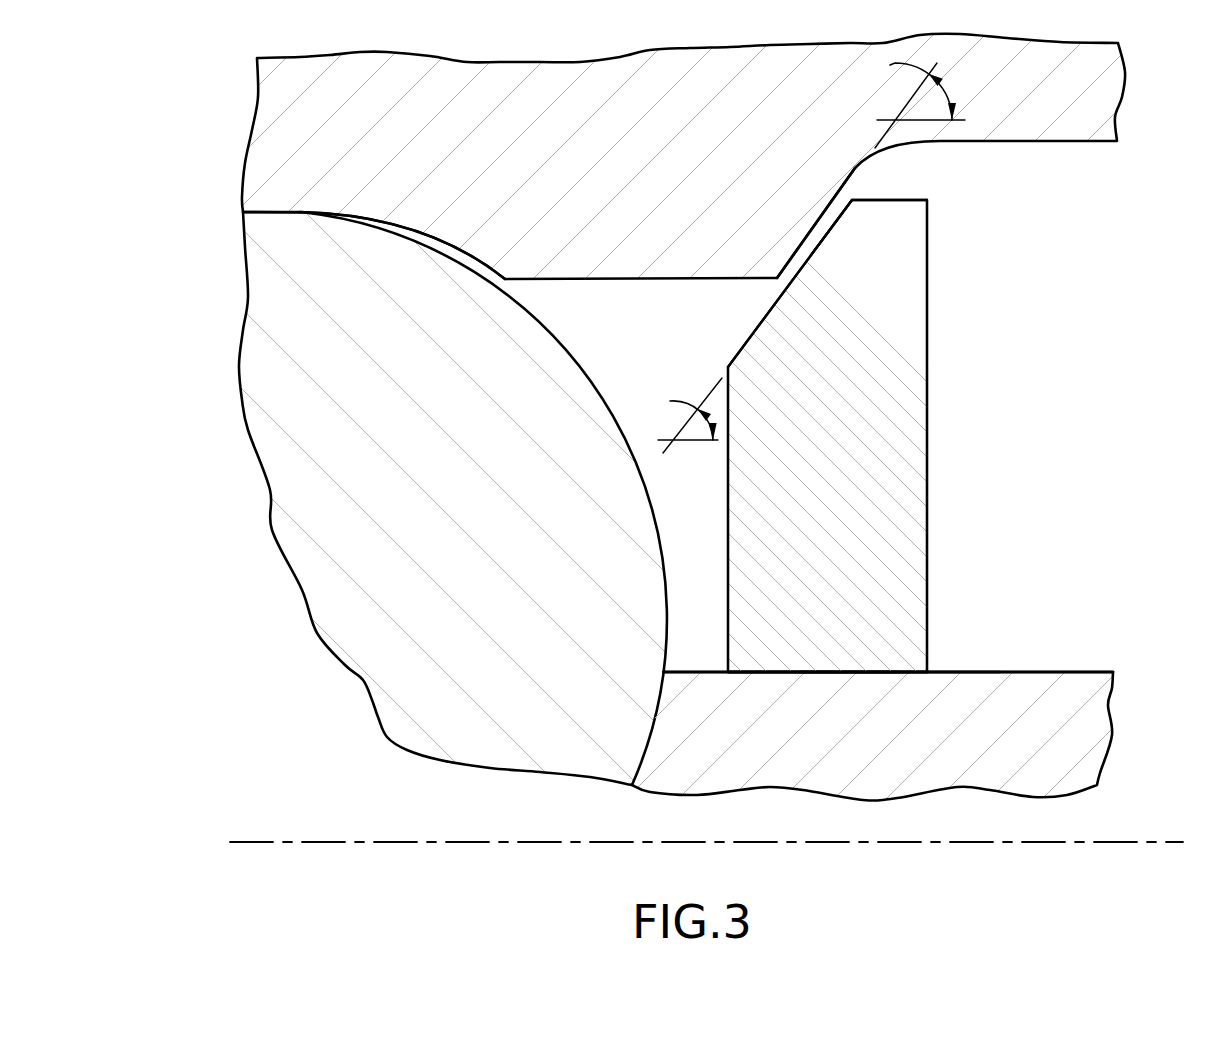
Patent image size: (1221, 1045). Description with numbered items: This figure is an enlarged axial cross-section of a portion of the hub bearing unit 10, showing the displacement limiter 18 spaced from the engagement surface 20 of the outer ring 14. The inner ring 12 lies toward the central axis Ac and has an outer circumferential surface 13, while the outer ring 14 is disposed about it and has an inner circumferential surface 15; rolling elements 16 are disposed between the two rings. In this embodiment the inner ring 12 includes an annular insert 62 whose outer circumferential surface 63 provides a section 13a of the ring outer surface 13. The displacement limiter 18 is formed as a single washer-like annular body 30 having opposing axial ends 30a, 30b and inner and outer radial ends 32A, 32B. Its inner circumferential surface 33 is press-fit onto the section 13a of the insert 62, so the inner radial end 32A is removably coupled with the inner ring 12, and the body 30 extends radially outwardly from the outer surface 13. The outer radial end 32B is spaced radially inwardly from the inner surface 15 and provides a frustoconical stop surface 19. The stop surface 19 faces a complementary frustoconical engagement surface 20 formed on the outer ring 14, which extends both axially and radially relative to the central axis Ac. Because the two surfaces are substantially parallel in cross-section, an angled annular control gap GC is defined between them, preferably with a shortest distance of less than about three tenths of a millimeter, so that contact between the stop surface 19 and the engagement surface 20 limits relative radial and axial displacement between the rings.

The hub bearing unit 10 is at (1085, 370).
The inner ring 12 is at (1095, 632).
The outer circumferential surface 13 is at (1003, 670).
The section of the ring outer surface 13a is at (802, 672).
The outer ring 14 is at (1090, 163).
The inner circumferential surface 15 is at (549, 282).
The rolling elements 16 is at (285, 420).
The displacement limiter 18 is at (970, 445).
The frustoconical stop surface 19 is at (758, 327).
The engagement surface 20 is at (826, 212).
The annular body 30 is at (917, 505).
The axial end 30a is at (927, 371).
The axial end 30b is at (728, 534).
The inner radial end 32A is at (750, 657).
The outer radial end 32B is at (903, 206).
The inner circumferential surface 33 is at (855, 672).
The annular insert 62 is at (1072, 720).
The outer circumferential surface 63 is at (947, 672).
The angled annular control gap GC is at (803, 255).
The central axis Ac is at (1155, 842).